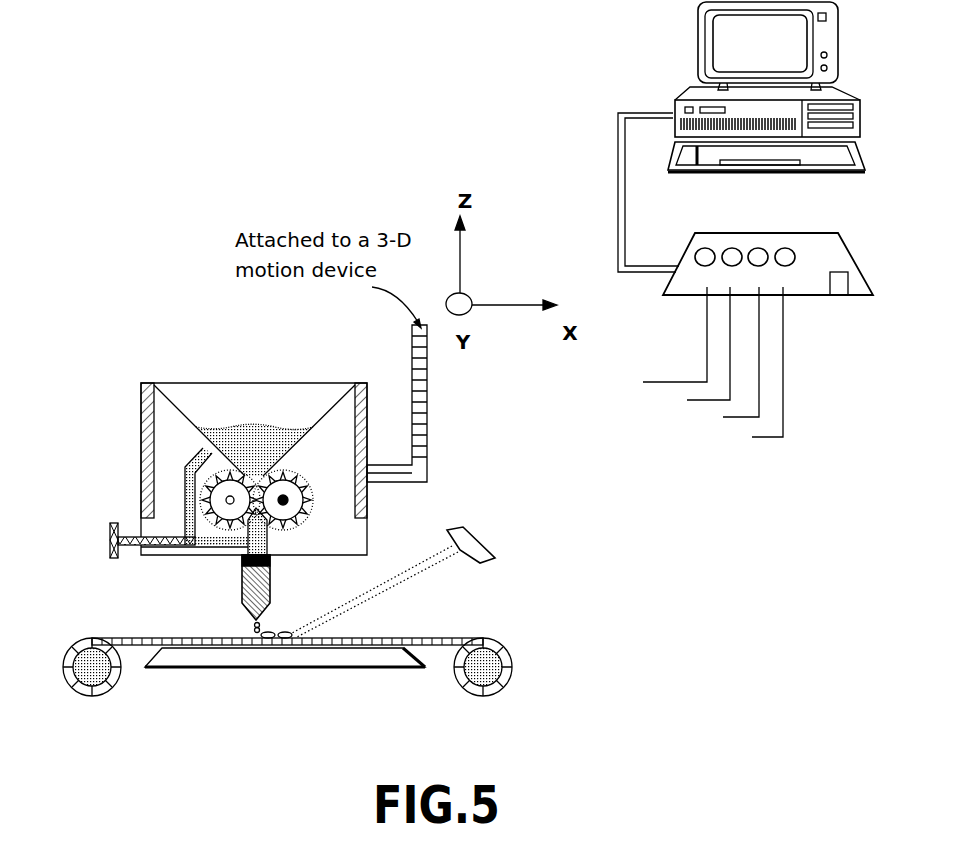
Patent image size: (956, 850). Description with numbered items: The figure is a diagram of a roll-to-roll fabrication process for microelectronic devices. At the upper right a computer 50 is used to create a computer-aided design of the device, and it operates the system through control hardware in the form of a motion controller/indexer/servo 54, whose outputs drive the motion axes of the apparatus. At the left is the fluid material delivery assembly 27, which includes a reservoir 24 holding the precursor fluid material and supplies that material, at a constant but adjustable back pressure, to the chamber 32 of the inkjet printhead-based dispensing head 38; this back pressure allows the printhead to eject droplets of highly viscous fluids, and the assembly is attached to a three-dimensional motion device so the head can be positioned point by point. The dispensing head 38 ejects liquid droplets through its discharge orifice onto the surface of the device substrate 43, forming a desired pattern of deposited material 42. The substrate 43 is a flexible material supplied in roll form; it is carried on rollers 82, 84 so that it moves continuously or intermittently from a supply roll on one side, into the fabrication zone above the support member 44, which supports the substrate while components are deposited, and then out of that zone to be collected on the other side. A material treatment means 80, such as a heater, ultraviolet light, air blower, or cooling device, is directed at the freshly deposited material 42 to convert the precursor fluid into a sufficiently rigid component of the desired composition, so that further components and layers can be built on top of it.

The fluid material delivery assembly 27 is at (148, 328).
The reservoir 24 is at (313, 400).
The chamber 32 is at (263, 538).
The inkjet printhead-based dispensing head 38 is at (250, 580).
The deposited material 42 is at (285, 632).
The device substrate 43 is at (145, 637).
The support member 44 is at (197, 657).
The material treatment means 80 is at (405, 587).
The roller 82 is at (493, 682).
The roller 84 is at (70, 682).
The computer 50 is at (698, 80).
The motion controller/indexer/servo 54 is at (815, 240).